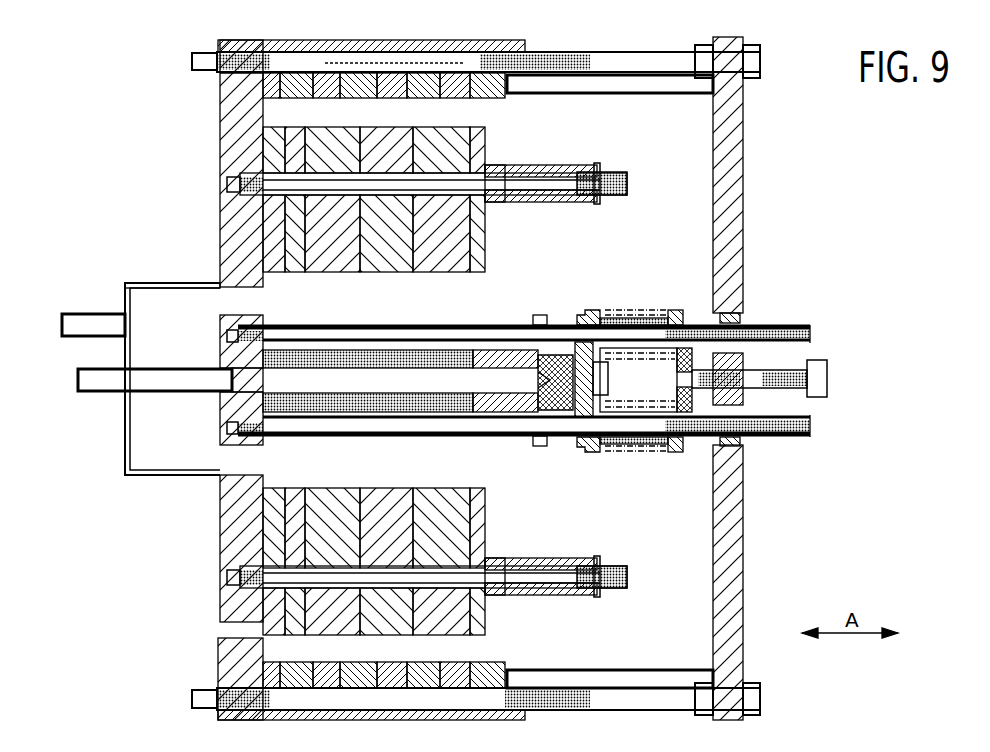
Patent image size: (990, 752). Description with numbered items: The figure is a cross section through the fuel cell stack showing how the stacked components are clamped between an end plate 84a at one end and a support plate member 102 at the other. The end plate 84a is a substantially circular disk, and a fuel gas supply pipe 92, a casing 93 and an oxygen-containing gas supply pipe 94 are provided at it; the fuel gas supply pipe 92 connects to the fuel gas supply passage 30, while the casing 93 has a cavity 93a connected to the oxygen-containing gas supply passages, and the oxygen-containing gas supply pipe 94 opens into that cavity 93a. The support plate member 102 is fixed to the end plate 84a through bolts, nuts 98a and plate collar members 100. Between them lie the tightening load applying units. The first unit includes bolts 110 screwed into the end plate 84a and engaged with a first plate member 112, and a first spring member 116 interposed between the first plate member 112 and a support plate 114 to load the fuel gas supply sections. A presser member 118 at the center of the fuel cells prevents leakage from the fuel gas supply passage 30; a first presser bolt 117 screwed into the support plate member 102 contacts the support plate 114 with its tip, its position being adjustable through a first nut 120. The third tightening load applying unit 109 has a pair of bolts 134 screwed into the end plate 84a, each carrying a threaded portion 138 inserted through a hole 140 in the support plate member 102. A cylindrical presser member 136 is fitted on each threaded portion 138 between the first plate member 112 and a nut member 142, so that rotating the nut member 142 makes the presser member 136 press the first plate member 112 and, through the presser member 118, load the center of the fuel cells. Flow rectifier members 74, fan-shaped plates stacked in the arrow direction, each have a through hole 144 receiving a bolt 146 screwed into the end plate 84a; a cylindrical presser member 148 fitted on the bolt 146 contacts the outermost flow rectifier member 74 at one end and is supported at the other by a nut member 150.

The fuel gas supply passage 30 is at (218, 412).
The flow rectifier member 74 is at (313, 145).
The end plate 84a is at (234, 103).
The fuel gas supply pipe 92 is at (160, 367).
The casing 93 is at (127, 476).
The cavity 93a is at (150, 298).
The oxygen-containing gas supply pipe 94 is at (88, 312).
The nut 98a is at (690, 702).
The plate collar member 100 is at (642, 668).
The support plate member 102 is at (735, 237).
The third tightening load applying unit 109 is at (580, 313).
The bolt 110 is at (610, 378).
The first plate member 112 is at (592, 452).
The support plate 114 is at (682, 452).
The first spring member 116 is at (592, 311).
The first presser bolt 117 is at (738, 448).
The presser member 118 is at (495, 405).
The first nut 120 is at (750, 394).
The bolt 134 is at (465, 325).
The presser member 136 is at (643, 317).
The threaded portion 138 is at (696, 302).
The hole 140 is at (742, 319).
The nut member 142 is at (752, 347).
The through hole 144 is at (498, 205).
The bolt 146 is at (560, 178).
The cylindrical presser member 148 is at (520, 165).
The nut member 150 is at (605, 204).